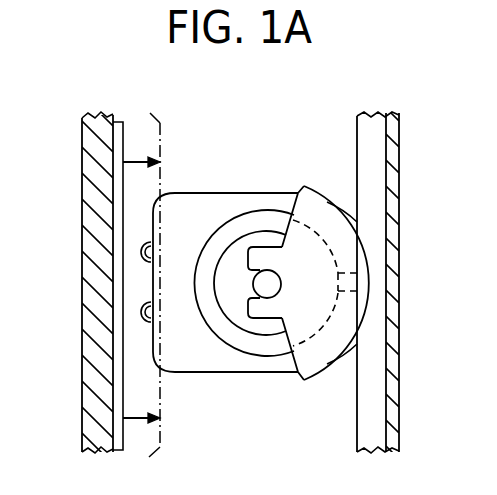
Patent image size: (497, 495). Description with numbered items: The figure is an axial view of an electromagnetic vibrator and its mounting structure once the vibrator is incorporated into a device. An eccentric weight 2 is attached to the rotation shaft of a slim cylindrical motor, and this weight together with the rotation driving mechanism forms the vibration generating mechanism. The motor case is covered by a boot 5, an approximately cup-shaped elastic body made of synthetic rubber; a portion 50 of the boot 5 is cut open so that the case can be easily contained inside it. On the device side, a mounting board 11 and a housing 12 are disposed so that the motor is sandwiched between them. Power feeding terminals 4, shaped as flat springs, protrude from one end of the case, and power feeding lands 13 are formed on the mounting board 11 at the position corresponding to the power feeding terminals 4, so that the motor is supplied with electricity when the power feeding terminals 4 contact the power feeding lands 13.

The eccentric weight 2 is at (338, 233).
The power feeding terminals 4 is at (143, 323).
The boot 5 is at (192, 215).
The mounting board 11 is at (95, 412).
The housing 12 is at (372, 388).
The power feeding lands 13 is at (121, 318).
The cut-open portion 50 is at (343, 281).